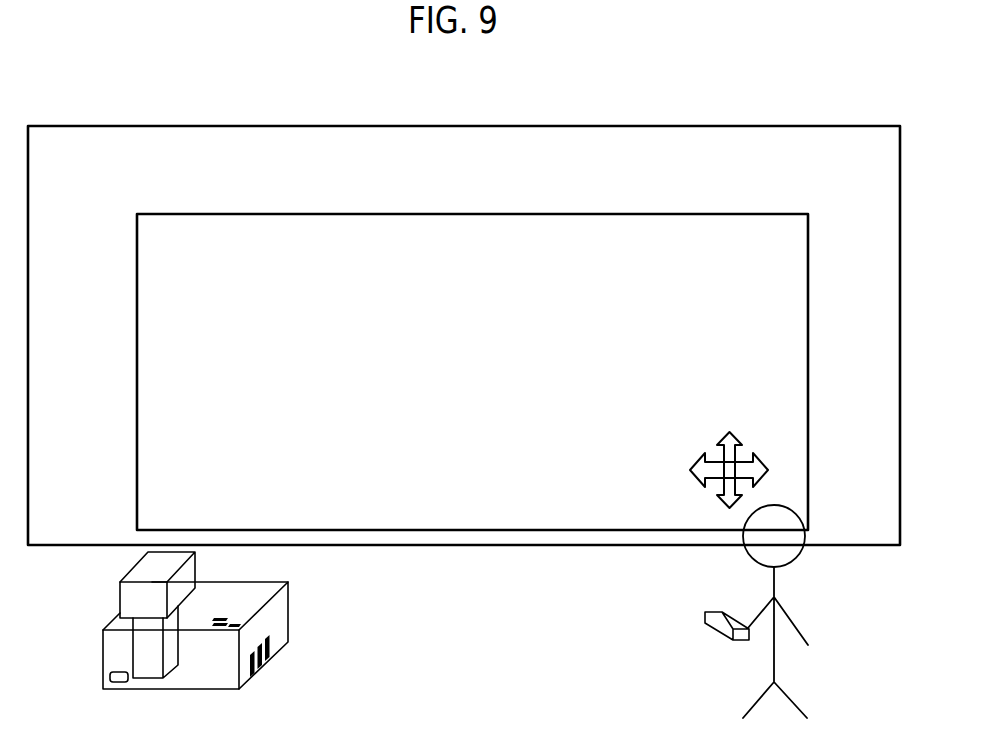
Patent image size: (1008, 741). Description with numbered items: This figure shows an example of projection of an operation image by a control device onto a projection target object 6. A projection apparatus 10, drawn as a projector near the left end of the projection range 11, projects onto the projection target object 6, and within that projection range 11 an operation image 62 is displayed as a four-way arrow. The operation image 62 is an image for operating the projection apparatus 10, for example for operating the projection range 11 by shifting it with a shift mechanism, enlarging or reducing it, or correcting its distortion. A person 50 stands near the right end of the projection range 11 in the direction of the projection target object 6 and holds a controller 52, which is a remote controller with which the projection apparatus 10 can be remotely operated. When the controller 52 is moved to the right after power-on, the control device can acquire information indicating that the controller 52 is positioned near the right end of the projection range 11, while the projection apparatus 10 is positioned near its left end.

The projection target object 6 is at (825, 126).
The projection range 11 is at (808, 233).
The operation image 62 is at (737, 436).
The user 50 is at (772, 505).
The controller 52 is at (718, 635).
The projection apparatus 10 is at (288, 584).